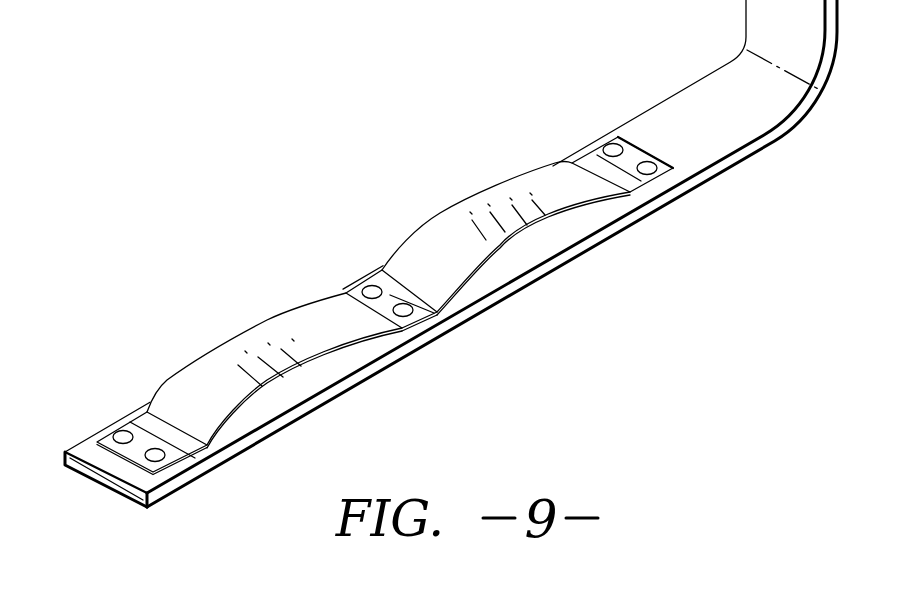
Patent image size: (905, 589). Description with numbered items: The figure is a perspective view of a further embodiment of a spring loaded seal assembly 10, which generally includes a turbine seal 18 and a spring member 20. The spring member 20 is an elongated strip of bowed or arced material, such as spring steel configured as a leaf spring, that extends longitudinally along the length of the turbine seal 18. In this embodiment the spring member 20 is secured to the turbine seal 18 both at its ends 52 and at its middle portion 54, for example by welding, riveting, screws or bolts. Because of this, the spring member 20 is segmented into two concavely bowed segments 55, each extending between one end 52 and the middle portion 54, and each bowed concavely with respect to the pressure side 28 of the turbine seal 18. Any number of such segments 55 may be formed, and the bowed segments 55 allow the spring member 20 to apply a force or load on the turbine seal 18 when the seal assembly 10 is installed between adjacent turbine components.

The spring loaded seal assembly 10 is at (349, 193).
The turbine seal 18 is at (675, 86).
The spring member 20 is at (315, 298).
The pressure side 28 is at (720, 138).
The ends 52 is at (160, 462).
The middle portion 54 is at (413, 290).
The concavely bowed segments 55 is at (248, 337).